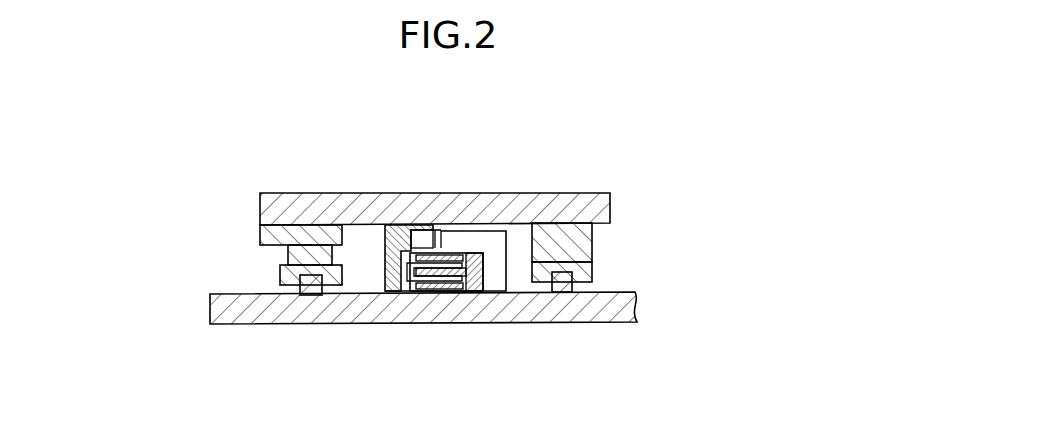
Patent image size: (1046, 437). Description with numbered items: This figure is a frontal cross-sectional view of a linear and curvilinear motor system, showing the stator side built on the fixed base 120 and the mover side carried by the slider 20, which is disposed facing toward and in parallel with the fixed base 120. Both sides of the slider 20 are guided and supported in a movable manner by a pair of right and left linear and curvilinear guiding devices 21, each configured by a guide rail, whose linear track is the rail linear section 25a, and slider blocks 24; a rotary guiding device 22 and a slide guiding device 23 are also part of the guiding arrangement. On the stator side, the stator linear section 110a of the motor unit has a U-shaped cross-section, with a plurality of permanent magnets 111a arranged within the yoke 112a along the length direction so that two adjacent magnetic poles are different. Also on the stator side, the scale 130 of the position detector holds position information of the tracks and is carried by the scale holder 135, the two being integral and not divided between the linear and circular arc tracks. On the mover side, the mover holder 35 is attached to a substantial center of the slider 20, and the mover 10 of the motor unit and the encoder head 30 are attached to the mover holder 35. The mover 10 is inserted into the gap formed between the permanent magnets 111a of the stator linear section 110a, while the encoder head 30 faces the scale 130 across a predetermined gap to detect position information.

The mover 10 is at (467, 333).
The slider 20 is at (594, 213).
The linear and curvilinear guiding device 21 is at (448, 320).
The rotary guiding device 22 is at (288, 249).
The slide guiding device 23 is at (264, 236).
The slider block 24 is at (287, 275).
The rail linear section 25a is at (314, 286).
The encoder head 30 is at (418, 240).
The mover holder 35 is at (388, 236).
The stator linear section 110a is at (504, 331).
The permanent magnet of the stator linear section 111a is at (433, 288).
The yoke of the stator linear section 112a is at (458, 288).
The fixed base 120 is at (630, 302).
The scale 130 is at (440, 240).
The scale holder 135 is at (490, 240).